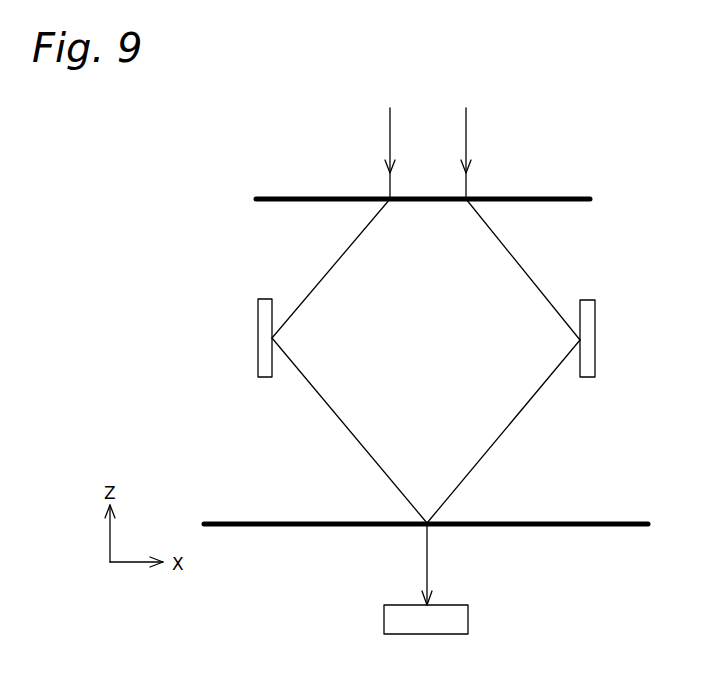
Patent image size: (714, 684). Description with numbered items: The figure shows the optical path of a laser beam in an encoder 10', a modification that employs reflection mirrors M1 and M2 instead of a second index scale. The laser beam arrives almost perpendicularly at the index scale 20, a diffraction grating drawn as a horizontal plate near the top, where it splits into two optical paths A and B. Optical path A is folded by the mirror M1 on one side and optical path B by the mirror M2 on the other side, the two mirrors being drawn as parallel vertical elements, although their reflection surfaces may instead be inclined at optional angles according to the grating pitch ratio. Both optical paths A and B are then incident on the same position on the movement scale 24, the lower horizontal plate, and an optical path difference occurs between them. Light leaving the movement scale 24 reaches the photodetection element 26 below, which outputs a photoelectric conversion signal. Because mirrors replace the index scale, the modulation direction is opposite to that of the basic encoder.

The encoder 10' is at (437, 326).
The index scale 20 is at (576, 197).
The movement scale 24 is at (593, 522).
The photodetection element 26 is at (465, 605).
The mirror M1 is at (258, 323).
The mirror M2 is at (590, 300).
The optical path A is at (391, 136).
The optical path B is at (466, 136).